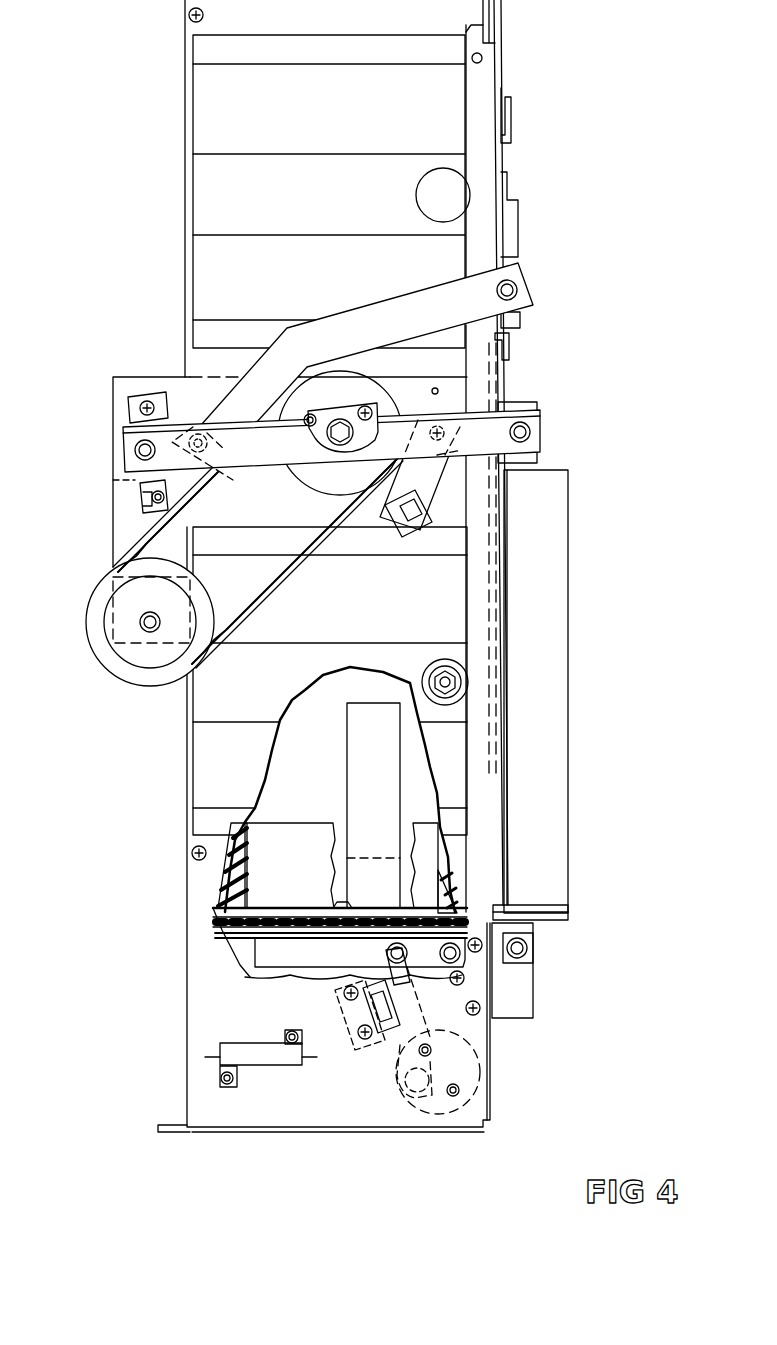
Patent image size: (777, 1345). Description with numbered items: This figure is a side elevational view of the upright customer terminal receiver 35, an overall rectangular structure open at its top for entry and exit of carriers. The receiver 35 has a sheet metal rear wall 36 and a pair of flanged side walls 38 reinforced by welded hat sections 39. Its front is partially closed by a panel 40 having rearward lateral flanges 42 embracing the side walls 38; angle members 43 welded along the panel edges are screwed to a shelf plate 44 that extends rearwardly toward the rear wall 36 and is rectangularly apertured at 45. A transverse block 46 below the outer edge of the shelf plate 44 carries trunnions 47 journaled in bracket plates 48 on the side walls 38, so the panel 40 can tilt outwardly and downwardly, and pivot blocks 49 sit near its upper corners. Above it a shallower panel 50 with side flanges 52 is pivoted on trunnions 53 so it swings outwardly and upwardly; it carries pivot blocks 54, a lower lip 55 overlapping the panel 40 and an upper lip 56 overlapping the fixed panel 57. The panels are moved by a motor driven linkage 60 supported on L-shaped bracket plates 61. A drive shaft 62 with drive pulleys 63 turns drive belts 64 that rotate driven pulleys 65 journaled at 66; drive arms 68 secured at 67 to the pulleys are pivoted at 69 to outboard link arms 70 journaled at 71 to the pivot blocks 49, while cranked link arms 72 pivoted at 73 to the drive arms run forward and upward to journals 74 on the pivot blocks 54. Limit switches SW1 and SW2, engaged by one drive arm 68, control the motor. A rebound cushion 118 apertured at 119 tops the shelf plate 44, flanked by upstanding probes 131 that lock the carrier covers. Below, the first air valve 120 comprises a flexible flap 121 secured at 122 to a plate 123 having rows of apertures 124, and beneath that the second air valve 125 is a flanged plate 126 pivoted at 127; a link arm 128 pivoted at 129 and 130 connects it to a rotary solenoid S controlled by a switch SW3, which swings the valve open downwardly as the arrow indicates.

The customer terminal receiver 35 is at (84, 210).
The rear wall 36 is at (186, 1022).
The side walls 38 is at (183, 27).
The hat sections 39 is at (320, 146).
The panel 40 is at (552, 616).
The rearward lateral flanges 42 is at (464, 603).
The angle members 43 is at (570, 556).
The shelf plate 44 is at (213, 920).
The rectangular aperture 45 is at (460, 905).
The transverse block 46 is at (515, 930).
The trunnions 47 is at (528, 950).
The bracket plates 48 is at (520, 1018).
The pivot blocks 49 is at (524, 405).
The shallower panel 50 is at (497, 155).
The side flanges 52 is at (468, 96).
The trunnions 53 is at (482, 61).
The pivot blocks 54 is at (521, 316).
The lower lip 55 is at (511, 345).
The upper lip 56 is at (512, 121).
The fixed panel 57 is at (500, 50).
The motor driven linkage 60 is at (113, 467).
The bracket plates 61 is at (120, 540).
The drive shaft 62 is at (146, 621).
The drive pulleys 63 is at (116, 665).
The drive belts 64 is at (284, 592).
The driven pulleys 65 is at (322, 500).
The journal 66 is at (335, 447).
The securing point 67 is at (310, 416).
The drive arms 68 is at (181, 420).
The pivot 69 is at (135, 450).
The outboard link arms 70 is at (270, 460).
The journal 71 is at (530, 430).
The cranked link arms 72 is at (422, 290).
The pivot 73 is at (222, 466).
The journal 74 is at (520, 287).
The rebound cushion 118 is at (243, 815).
The aperture 119 is at (300, 822).
The first air valve 120 is at (364, 935).
The flexible rectangular flap 121 is at (250, 942).
The securing point 122 is at (343, 900).
The plate 123 is at (240, 958).
The apertures 124 is at (270, 935).
The second air valve 125 is at (290, 985).
The flanged plate 126 is at (270, 976).
The pivot 127 is at (462, 968).
The link arm 128 is at (412, 995).
The pivot 129 is at (386, 953).
The pivot 130 is at (408, 1100).
The probes 131 is at (352, 722).
The rotary solenoid S is at (480, 1080).
The limit switch SW1 is at (140, 500).
The limit switch SW2 is at (403, 532).
The switch SW3 is at (361, 1033).